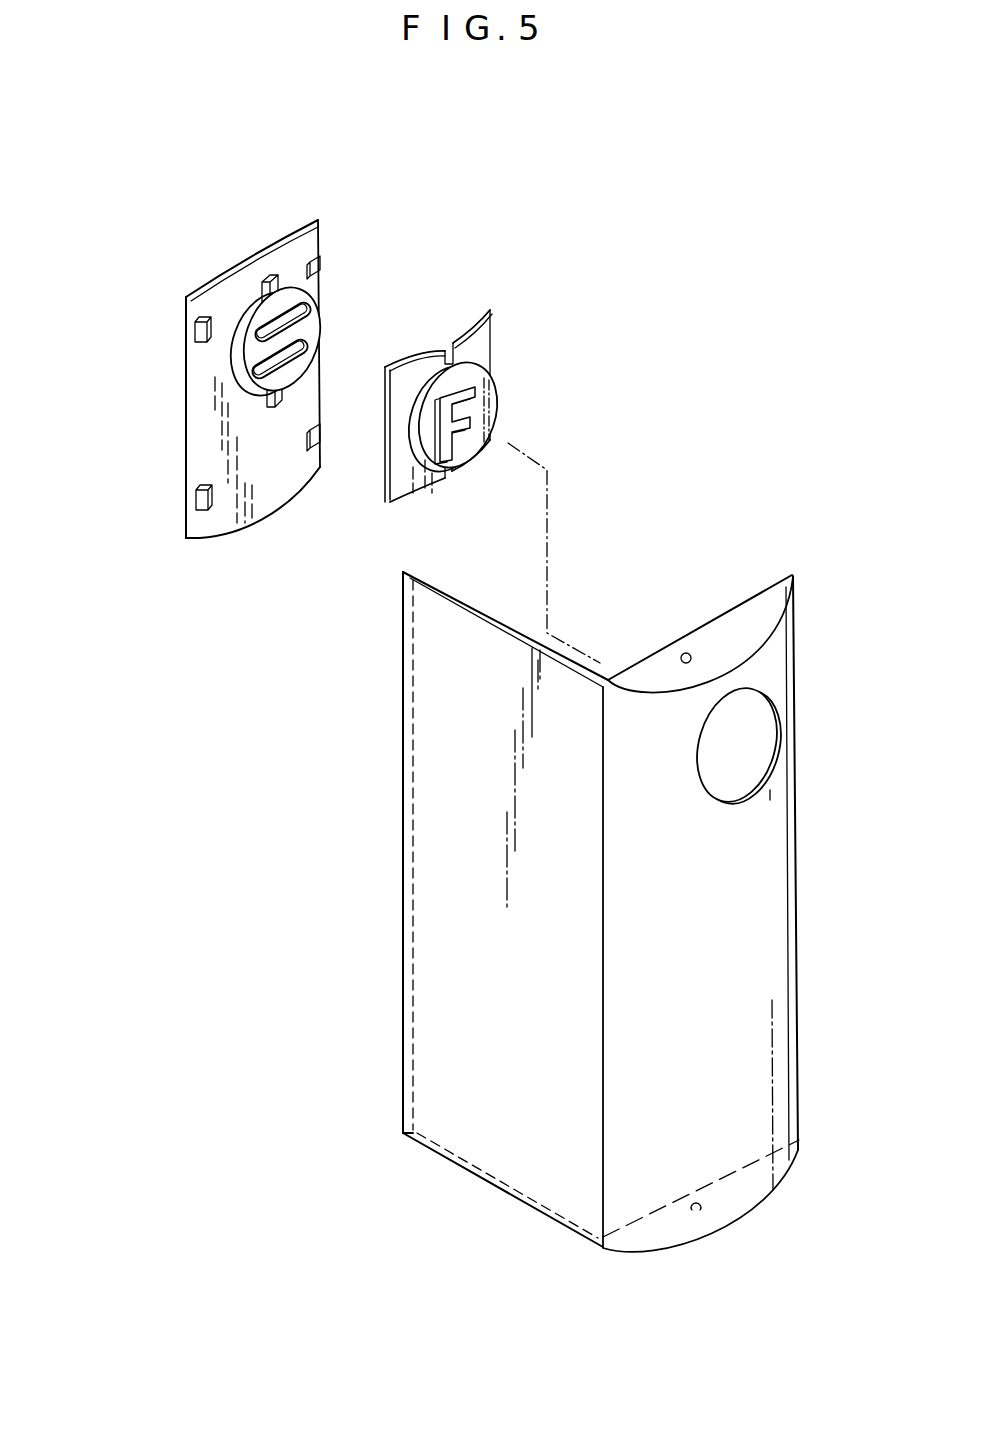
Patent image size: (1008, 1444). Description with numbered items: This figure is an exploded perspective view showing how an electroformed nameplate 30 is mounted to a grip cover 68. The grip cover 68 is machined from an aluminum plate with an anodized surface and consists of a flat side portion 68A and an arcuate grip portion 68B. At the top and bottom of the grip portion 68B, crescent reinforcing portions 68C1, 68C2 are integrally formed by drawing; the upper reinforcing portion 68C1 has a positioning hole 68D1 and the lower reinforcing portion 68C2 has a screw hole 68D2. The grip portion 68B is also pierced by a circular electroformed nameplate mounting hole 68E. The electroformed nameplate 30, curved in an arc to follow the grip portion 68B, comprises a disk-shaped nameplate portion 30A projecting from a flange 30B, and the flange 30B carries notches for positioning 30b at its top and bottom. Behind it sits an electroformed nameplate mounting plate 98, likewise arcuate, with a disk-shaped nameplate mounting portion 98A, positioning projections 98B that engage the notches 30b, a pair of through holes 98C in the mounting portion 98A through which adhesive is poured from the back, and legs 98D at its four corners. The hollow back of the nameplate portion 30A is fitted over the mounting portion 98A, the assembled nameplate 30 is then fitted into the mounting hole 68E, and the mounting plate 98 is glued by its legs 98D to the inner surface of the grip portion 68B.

The electroformed nameplate mounting plate 98 is at (242, 374).
The nameplate mounting portion 98A is at (256, 358).
The positioning projections 98B is at (270, 280).
The through holes 98C is at (300, 308).
The legs 98D is at (322, 264).
The electroformed nameplate 30 is at (471, 465).
The nameplate portion 30A is at (483, 407).
The flange 30B is at (482, 407).
The notches for positioning 30b is at (446, 350).
The grip cover 68 is at (558, 923).
The side portion 68A is at (432, 823).
The grip portion 68B is at (738, 911).
The upper reinforcing portion 68C1 is at (704, 611).
The lower reinforcing portion 68C2 is at (712, 1228).
The positioning hole 68D1 is at (661, 615).
The screw hole 68D2 is at (659, 1260).
The electroformed nameplate mounting hole 68E is at (762, 746).